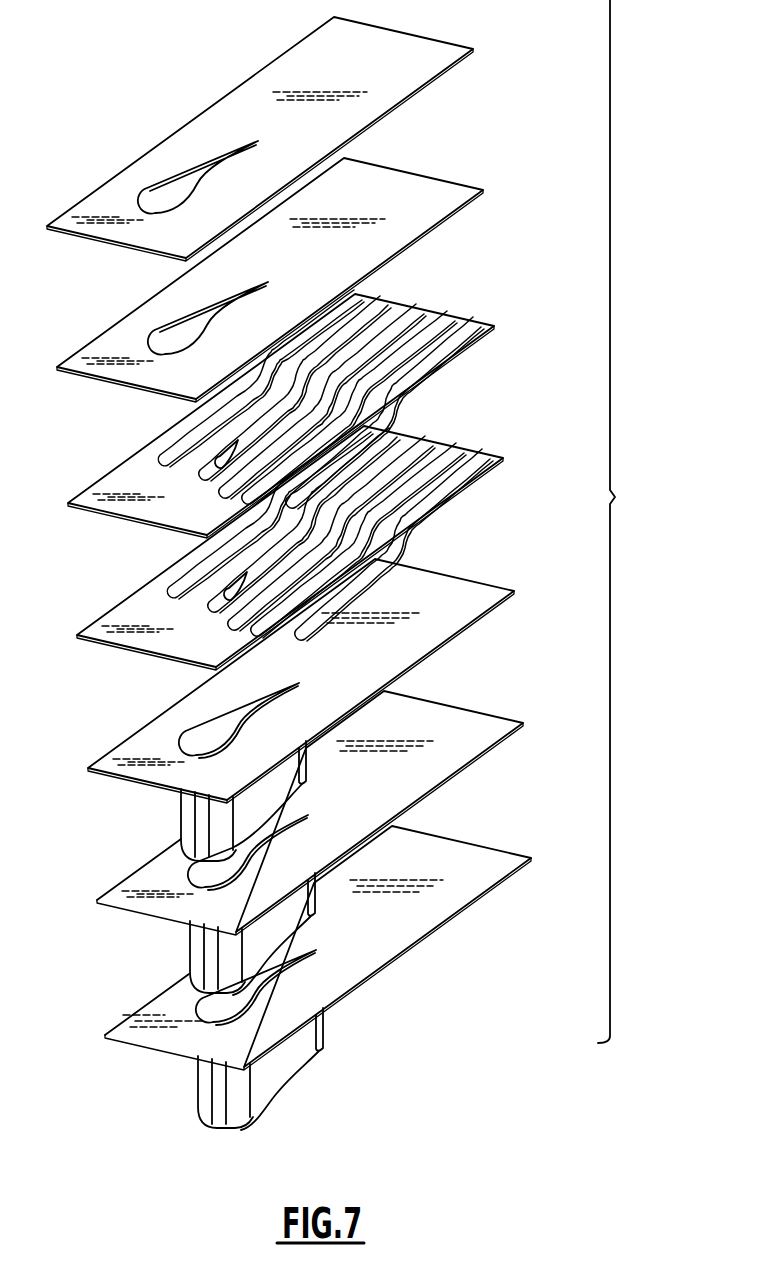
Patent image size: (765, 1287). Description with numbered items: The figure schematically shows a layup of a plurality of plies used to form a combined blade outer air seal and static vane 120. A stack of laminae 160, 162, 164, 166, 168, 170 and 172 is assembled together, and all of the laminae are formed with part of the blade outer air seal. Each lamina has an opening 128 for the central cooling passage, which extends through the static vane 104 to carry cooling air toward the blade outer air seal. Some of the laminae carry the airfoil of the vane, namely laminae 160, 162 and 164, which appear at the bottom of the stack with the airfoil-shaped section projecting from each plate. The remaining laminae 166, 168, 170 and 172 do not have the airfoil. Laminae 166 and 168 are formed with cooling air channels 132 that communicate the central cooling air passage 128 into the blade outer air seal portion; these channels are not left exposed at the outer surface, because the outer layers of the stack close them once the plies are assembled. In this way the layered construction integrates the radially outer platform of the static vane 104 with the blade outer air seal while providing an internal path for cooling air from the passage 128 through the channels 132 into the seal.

The combined blade outer air seal and static vane 120 is at (629, 521).
The lamina 172 is at (267, 104).
The lamina 170 is at (407, 197).
The lamina 168 is at (117, 483).
The lamina 166 is at (132, 627).
The lamina 164 is at (137, 760).
The lamina 162 is at (140, 895).
The lamina 160 is at (160, 1035).
The cooling air passage opening 128 is at (167, 200).
The cooling air channels 132 is at (458, 314).
The static vane 104 is at (187, 813).